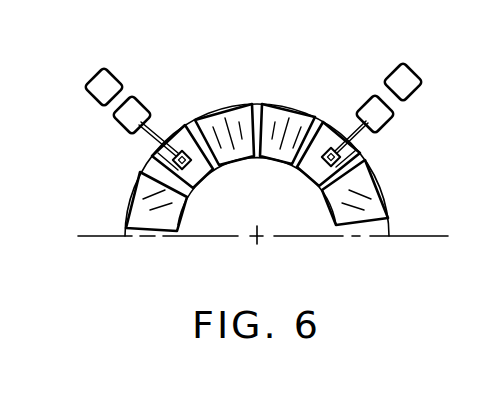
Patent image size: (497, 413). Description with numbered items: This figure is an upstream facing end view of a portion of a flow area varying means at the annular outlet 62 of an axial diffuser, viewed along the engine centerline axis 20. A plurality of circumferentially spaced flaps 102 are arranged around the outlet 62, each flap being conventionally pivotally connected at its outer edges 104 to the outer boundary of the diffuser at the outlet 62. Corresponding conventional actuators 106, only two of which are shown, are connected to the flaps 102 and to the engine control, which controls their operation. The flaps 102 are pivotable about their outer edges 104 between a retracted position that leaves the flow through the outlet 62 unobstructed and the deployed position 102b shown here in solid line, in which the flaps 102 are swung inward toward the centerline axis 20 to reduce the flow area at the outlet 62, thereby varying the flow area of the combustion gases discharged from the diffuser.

The engine centerline axis 20 is at (257, 238).
The annular outlet 62 is at (198, 222).
The flaps 102 is at (260, 138).
The deployed position 102b is at (206, 176).
The outer edges 104 is at (238, 101).
The actuators 106 is at (144, 108).